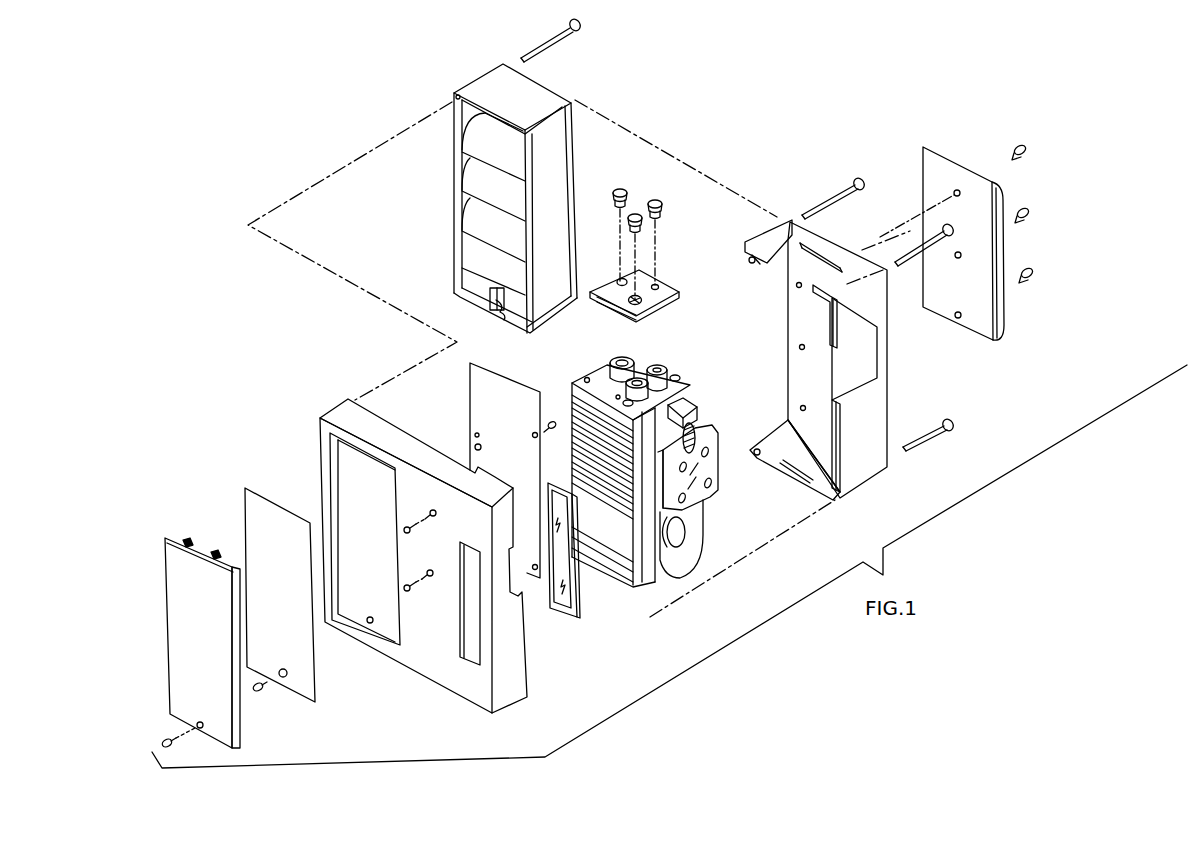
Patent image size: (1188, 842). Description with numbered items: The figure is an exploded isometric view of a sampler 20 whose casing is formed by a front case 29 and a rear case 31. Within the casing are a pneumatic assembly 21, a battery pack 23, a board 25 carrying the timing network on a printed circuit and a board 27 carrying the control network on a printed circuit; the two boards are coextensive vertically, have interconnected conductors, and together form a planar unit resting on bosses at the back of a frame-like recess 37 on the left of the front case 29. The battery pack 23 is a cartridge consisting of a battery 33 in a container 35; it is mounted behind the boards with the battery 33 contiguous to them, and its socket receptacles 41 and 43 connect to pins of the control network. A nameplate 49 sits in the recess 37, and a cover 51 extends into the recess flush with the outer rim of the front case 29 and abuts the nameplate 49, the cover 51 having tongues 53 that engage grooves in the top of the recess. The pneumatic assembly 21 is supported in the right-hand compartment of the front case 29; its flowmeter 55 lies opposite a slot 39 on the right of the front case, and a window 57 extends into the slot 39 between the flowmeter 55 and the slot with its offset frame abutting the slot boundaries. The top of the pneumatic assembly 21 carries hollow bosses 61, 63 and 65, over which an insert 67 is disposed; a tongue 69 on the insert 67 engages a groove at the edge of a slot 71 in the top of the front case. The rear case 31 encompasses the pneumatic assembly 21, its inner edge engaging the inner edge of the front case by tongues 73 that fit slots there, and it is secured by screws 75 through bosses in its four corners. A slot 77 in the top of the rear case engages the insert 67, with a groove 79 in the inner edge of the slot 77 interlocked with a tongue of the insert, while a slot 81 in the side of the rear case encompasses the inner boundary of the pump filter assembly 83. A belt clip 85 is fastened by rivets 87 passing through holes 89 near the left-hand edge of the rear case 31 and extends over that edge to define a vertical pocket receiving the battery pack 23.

The sampler 20 is at (868, 550).
The pneumatic assembly 21 is at (752, 531).
The battery pack 23 is at (562, 180).
The board 25 is at (475, 405).
The board 27 is at (478, 450).
The front case 29 is at (527, 705).
The rear case 31 is at (898, 503).
The battery 33 is at (468, 180).
The container 35 is at (562, 142).
The frame-like recess 37 is at (345, 478).
The slot 39 is at (477, 604).
The socket receptacle 41 is at (490, 302).
The socket receptacle 43 is at (500, 312).
The nameplate 49 is at (252, 521).
The cover 51 is at (170, 612).
The tongues 53 is at (187, 540).
The flowmeter 55 is at (648, 578).
The window 57 is at (585, 592).
The hollow boss 61 is at (614, 365).
The hollow boss 63 is at (638, 372).
The hollow boss 65 is at (660, 364).
The insert 67 is at (632, 272).
The tongue 69 is at (622, 305).
The slot 71 is at (448, 456).
The tongues 73 is at (838, 328).
The screws 75 is at (576, 36).
The slot 77 is at (777, 233).
The groove 79 is at (820, 253).
The slot 81 is at (880, 360).
The pump filter assembly 83 is at (702, 443).
The belt clip 85 is at (923, 155).
The rivets 87 is at (1030, 151).
The holes 89 is at (799, 347).